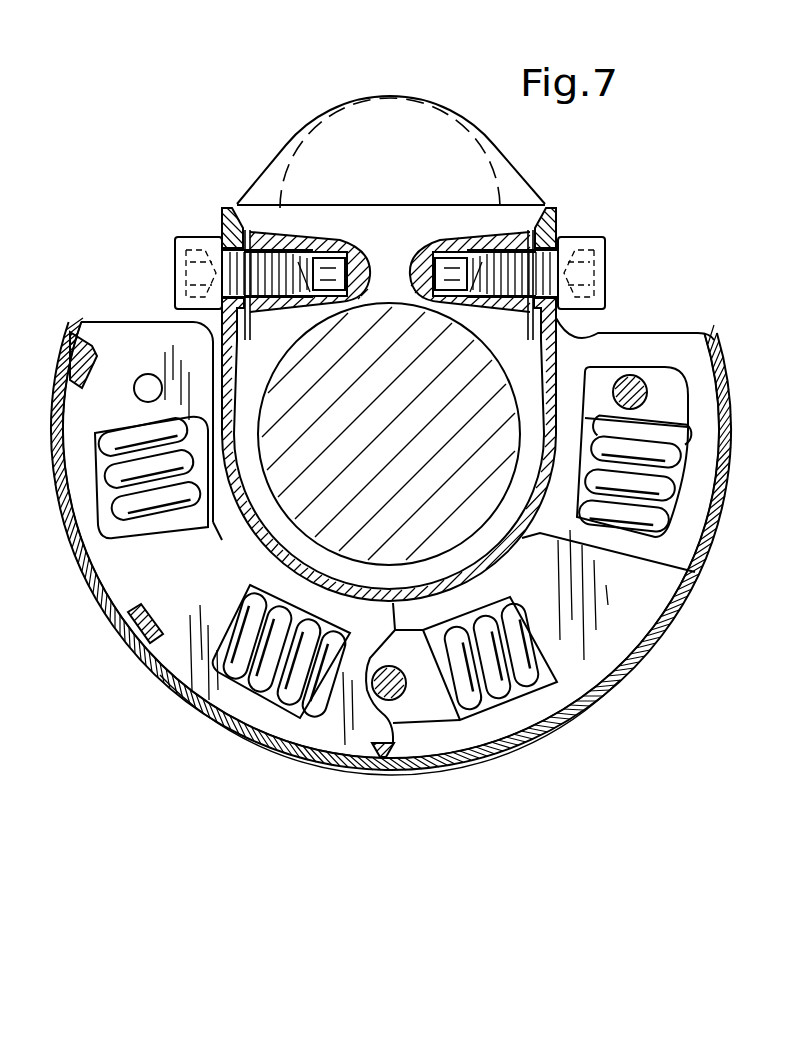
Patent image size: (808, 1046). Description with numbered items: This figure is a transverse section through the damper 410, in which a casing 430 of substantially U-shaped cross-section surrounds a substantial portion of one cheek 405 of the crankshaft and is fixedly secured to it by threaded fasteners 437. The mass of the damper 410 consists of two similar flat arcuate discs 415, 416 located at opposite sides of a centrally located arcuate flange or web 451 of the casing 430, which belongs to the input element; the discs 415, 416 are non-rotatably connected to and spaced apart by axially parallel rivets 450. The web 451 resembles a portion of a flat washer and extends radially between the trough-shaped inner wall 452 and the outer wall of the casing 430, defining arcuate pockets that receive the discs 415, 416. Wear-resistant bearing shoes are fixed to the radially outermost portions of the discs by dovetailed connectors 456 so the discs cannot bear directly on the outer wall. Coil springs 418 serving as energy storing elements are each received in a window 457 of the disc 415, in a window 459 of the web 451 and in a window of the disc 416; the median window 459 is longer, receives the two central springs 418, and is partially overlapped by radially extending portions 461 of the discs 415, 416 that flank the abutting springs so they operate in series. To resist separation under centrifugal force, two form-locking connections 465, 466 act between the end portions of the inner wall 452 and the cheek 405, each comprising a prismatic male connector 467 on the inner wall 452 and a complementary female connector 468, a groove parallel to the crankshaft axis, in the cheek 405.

The cheek 405 is at (534, 408).
The damper 410 is at (220, 745).
The flat arcuate part (disc) 415 is at (105, 348).
The flat arcuate part (disc) 416 is at (670, 407).
The energy storing elements (coil springs) 418 is at (112, 530).
The casing 430 is at (485, 712).
The threaded fasteners 437 is at (578, 250).
The rivets 450 is at (148, 386).
The flange or web 451 is at (613, 637).
The inner wall 452 is at (690, 571).
The dovetailed connectors 456 is at (138, 640).
The window 457 is at (103, 458).
The window 459 is at (677, 467).
The radially extending portions 461 is at (418, 718).
The form-locking connection 465 is at (221, 312).
The form-locking connection 466 is at (557, 326).
The prismatic male connector 467 is at (236, 222).
The female connector 468 is at (256, 228).